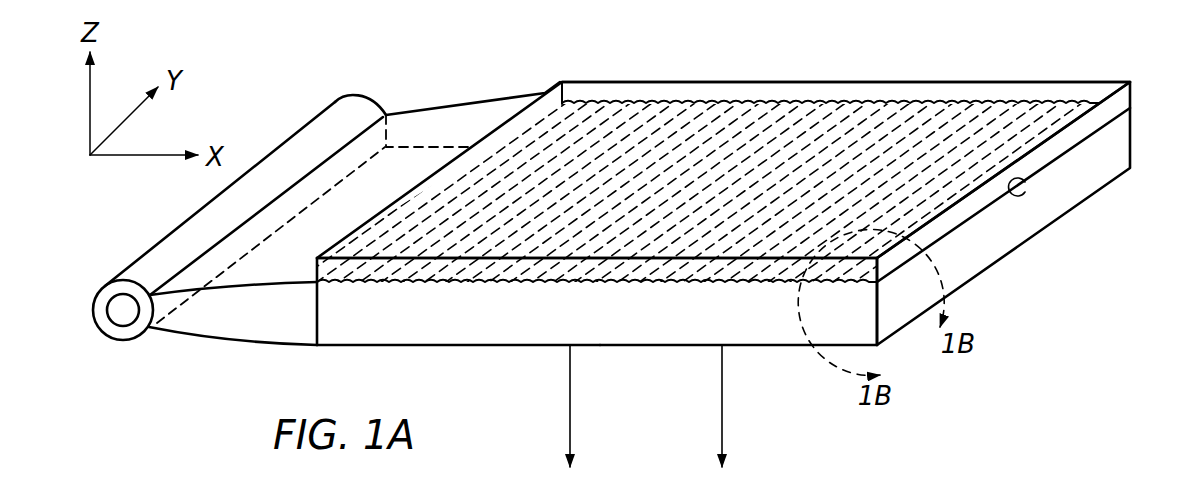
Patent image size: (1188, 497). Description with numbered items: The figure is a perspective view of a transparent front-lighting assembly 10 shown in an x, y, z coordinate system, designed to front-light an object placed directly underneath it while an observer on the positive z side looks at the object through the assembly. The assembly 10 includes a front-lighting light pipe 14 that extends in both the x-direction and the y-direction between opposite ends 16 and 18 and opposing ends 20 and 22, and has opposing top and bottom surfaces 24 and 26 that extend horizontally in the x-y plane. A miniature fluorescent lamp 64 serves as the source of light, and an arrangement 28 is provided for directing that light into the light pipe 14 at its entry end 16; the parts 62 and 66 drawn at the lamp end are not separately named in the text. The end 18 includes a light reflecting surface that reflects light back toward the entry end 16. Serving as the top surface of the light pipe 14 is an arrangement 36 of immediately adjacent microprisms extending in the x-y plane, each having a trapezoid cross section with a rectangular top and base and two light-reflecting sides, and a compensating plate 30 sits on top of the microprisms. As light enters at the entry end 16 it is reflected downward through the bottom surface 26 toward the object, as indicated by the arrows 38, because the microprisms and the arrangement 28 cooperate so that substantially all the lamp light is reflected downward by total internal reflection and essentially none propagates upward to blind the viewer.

The front-lighting assembly 10 is at (684, 130).
The front-lighting light pipe 14 is at (1083, 185).
The entry end 16 is at (318, 302).
The end 18 is at (1028, 180).
The end 20 is at (1018, 82).
The end 22 is at (482, 329).
The top surface 24 is at (417, 284).
The bottom surface 26 is at (773, 345).
The arrangement for directing light 28 is at (460, 115).
The compensating plate 30 is at (945, 228).
The arrangement of microprisms 36 is at (683, 291).
The light 38 is at (571, 390).
The web 62 is at (203, 323).
The miniature fluorescent lamp 64 is at (117, 310).
The roller 66 is at (316, 136).